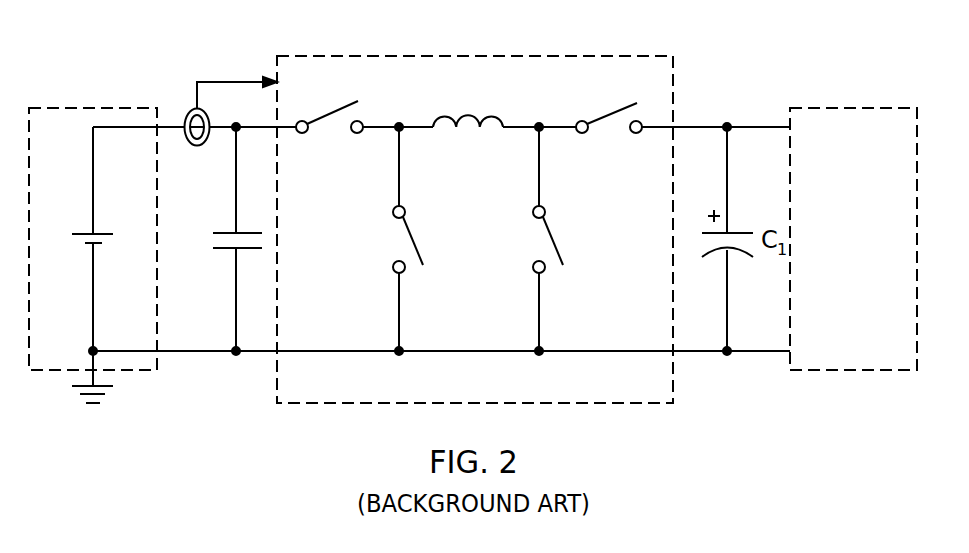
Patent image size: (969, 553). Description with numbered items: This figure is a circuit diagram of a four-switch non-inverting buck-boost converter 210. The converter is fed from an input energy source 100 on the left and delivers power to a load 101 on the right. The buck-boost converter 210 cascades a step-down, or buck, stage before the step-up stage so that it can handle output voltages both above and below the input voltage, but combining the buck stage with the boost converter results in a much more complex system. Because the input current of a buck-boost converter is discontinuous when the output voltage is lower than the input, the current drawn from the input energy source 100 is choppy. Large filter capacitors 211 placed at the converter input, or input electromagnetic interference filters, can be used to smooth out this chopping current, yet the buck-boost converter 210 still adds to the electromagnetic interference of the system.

The input energy source 100 is at (93, 107).
The load 101 is at (855, 108).
The four-switch non-inverting buck-boost converter 210 is at (475, 56).
The filter capacitors 211 is at (222, 230).